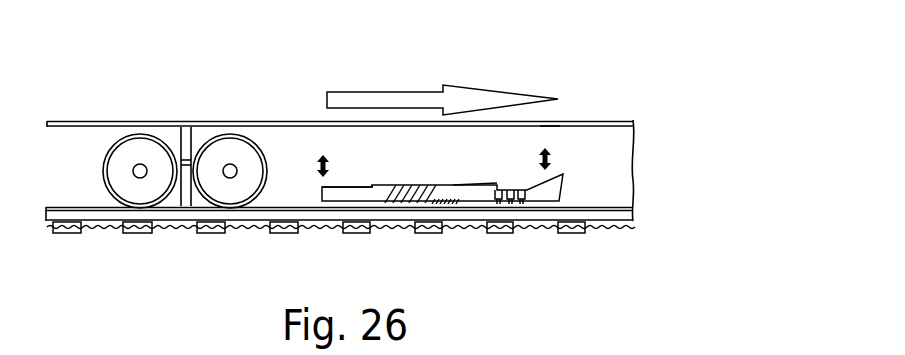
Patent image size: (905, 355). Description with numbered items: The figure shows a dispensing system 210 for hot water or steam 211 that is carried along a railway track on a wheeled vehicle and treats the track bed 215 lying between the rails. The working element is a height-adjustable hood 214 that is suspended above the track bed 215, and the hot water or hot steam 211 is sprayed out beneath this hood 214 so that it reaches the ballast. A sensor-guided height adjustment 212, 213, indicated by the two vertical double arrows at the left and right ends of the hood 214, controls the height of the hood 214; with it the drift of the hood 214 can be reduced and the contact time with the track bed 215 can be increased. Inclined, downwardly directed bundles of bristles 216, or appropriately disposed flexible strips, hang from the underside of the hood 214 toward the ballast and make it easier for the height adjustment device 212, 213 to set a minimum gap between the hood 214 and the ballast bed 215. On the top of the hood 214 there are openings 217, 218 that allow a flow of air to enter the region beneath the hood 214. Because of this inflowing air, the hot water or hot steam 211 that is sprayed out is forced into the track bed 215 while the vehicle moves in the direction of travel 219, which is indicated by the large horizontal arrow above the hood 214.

The dispensing system 210 is at (546, 137).
The hot water or steam 211 is at (528, 204).
The sensor-guided height adjustment 212 is at (317, 162).
The sensor-guided height adjustment 213 is at (550, 159).
The height-adjustable hood 214 is at (340, 196).
The track bed 215 is at (400, 232).
The bundles of bristles 216 is at (414, 185).
The opening 217 is at (376, 187).
The opening 218 is at (454, 184).
The direction of travel 219 is at (413, 90).